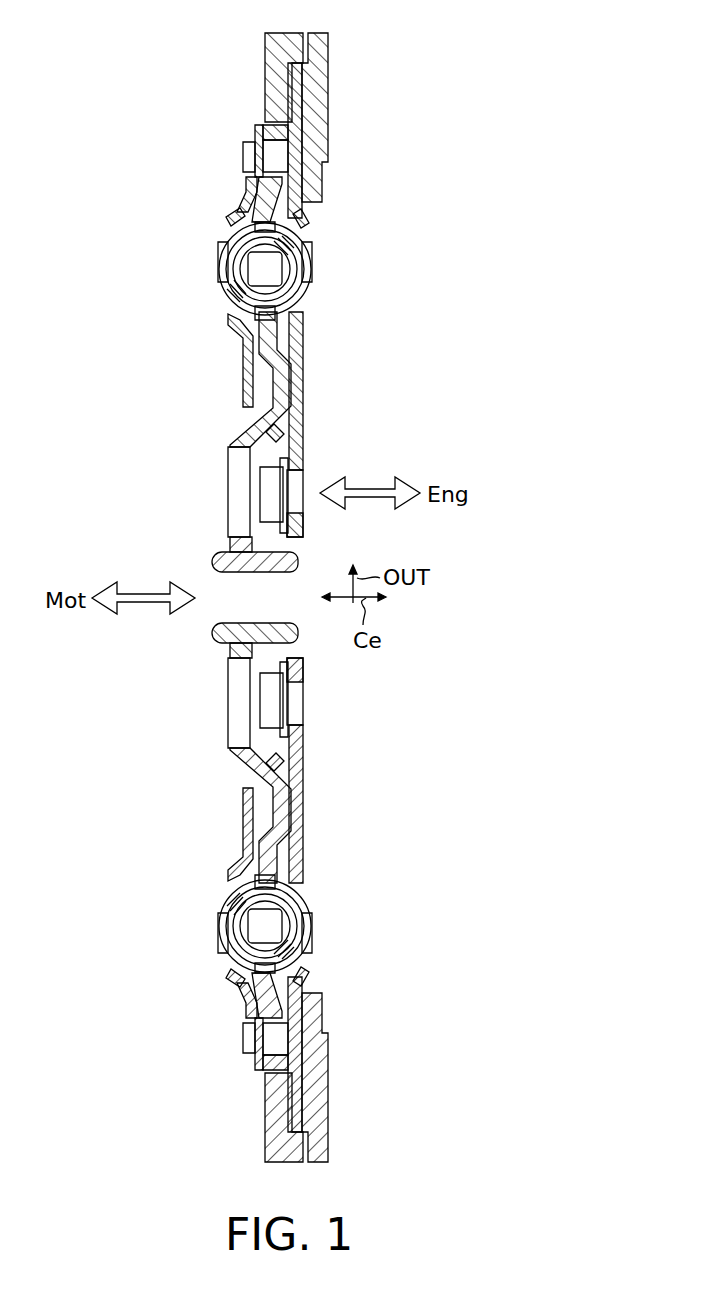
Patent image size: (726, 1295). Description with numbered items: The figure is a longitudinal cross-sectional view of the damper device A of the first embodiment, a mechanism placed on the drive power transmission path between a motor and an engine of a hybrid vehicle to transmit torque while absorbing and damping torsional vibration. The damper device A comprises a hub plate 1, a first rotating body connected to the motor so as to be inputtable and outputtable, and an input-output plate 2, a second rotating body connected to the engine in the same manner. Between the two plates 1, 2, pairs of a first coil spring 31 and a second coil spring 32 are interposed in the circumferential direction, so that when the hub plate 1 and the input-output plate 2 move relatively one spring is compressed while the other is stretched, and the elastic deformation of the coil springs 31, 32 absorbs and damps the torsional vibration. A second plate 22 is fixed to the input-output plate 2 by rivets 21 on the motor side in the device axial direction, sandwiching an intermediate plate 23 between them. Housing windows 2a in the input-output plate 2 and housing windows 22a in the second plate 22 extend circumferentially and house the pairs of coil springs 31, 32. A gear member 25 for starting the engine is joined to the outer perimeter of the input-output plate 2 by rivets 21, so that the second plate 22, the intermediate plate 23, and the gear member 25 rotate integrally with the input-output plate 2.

The hub plate 1 is at (230, 725).
The input-output plate 2 is at (306, 808).
The housing window 2a is at (308, 232).
The rivet 21 is at (243, 157).
The second plate 22 is at (233, 213).
The housing window 22a is at (233, 232).
The intermediate plate 23 is at (307, 392).
The gear member 25 is at (265, 68).
The first coil spring 31 is at (345, 271).
The second coil spring 32 is at (265, 269).
The damper device A is at (342, 220).